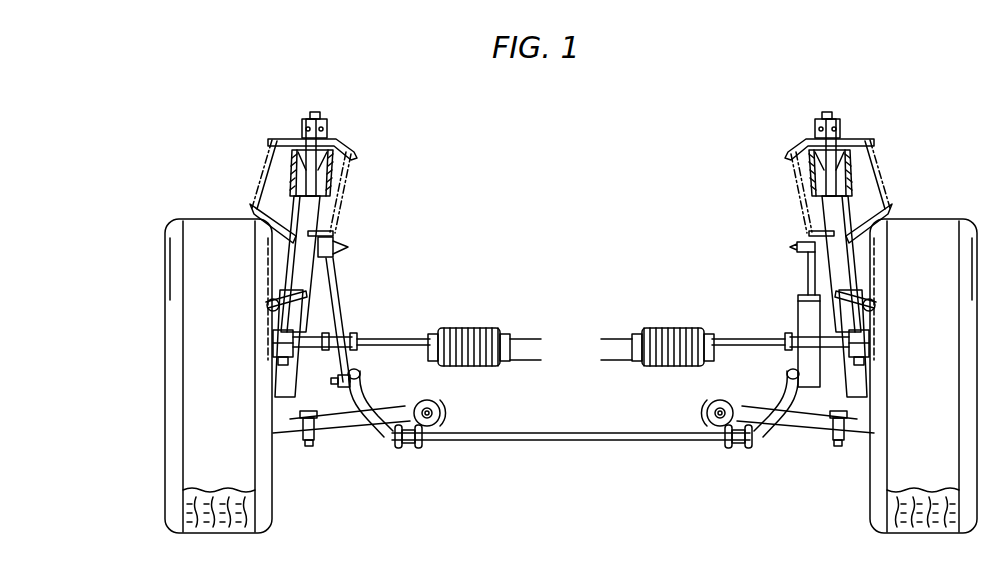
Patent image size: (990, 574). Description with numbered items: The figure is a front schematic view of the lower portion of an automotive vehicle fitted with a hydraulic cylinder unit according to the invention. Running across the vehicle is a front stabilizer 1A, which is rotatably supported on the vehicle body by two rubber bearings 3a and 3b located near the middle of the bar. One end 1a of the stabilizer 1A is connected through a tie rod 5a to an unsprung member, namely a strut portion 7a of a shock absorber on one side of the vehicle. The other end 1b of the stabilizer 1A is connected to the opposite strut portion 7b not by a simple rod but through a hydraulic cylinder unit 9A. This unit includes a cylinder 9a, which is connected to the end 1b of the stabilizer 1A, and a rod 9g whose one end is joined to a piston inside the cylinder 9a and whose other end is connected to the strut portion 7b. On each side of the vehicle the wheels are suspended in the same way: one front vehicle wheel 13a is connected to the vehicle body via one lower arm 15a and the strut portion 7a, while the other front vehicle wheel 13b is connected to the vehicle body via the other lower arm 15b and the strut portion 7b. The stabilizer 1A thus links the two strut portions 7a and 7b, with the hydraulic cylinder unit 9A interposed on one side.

The front stabilizer 1A is at (496, 444).
The one end of the stabilizer 1a is at (370, 392).
The other end of the stabilizer 1b is at (778, 382).
The rubber bearing 3a is at (405, 450).
The rubber bearing 3b is at (738, 450).
The tie rod 5a is at (342, 316).
The strut portion 7a is at (302, 250).
The strut portion 7b is at (832, 208).
The hydraulic cylinder unit 9A is at (746, 314).
The cylinder 9a is at (806, 308).
The rod 9g is at (806, 262).
The front vehicle wheel 13a is at (178, 238).
The front vehicle wheel 13b is at (955, 218).
The lower arm 15a is at (331, 428).
The lower arm 15b is at (795, 420).